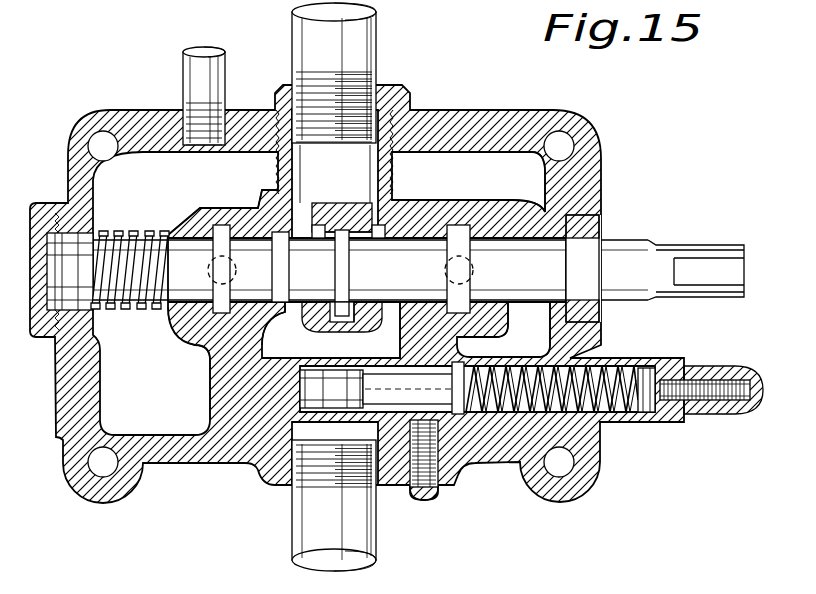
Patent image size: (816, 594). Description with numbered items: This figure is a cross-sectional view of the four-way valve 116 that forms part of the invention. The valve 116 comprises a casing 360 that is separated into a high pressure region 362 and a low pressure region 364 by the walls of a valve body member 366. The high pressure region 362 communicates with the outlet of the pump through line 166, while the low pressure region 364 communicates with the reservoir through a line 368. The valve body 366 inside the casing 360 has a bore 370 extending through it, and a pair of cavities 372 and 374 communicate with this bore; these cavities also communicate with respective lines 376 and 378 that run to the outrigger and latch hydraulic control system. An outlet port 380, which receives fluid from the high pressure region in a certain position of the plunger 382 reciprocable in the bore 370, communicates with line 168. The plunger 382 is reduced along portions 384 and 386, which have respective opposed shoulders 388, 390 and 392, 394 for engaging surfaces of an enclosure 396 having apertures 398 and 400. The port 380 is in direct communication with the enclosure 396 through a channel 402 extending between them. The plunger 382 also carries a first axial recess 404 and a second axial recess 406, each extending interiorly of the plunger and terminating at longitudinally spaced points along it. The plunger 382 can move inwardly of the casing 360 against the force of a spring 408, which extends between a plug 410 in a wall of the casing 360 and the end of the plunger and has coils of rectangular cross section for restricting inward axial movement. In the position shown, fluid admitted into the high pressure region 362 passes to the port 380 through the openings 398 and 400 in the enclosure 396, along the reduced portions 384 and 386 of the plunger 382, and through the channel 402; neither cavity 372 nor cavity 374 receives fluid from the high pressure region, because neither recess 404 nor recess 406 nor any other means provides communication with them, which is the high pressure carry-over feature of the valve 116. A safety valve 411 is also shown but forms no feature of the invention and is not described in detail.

The valve 116 is at (90, 108).
The line 166 is at (298, 530).
The line 168 is at (372, 30).
The casing 360 is at (532, 108).
The high pressure region 362 is at (232, 470).
The low pressure region 364 is at (196, 182).
The valve body member 366 is at (484, 212).
The line 368 is at (183, 78).
The bore 370 is at (506, 302).
The cavity 372 is at (190, 342).
The cavity 374 is at (506, 330).
The line 376 is at (238, 274).
The line 378 is at (476, 272).
The outlet port 380 is at (356, 178).
The plunger 382 is at (632, 242).
The reduced portion 384 is at (320, 248).
The reduced portion 386 is at (364, 250).
The shoulder 388 is at (314, 304).
The shoulder 390 is at (326, 320).
The shoulder 392 is at (356, 312).
The shoulder 394 is at (392, 304).
The enclosure 396 is at (282, 336).
The aperture 398 is at (322, 334).
The aperture 400 is at (360, 236).
The channel 402 is at (332, 210).
The first axial recess 404 is at (205, 212).
The second axial recess 406 is at (492, 232).
The spring 408 is at (122, 306).
The plug 410 is at (40, 282).
The safety valve 411 is at (352, 422).